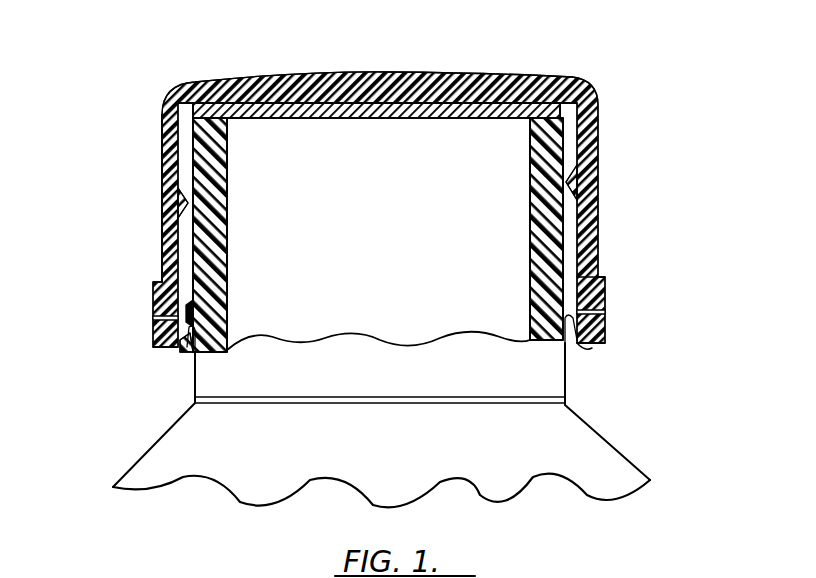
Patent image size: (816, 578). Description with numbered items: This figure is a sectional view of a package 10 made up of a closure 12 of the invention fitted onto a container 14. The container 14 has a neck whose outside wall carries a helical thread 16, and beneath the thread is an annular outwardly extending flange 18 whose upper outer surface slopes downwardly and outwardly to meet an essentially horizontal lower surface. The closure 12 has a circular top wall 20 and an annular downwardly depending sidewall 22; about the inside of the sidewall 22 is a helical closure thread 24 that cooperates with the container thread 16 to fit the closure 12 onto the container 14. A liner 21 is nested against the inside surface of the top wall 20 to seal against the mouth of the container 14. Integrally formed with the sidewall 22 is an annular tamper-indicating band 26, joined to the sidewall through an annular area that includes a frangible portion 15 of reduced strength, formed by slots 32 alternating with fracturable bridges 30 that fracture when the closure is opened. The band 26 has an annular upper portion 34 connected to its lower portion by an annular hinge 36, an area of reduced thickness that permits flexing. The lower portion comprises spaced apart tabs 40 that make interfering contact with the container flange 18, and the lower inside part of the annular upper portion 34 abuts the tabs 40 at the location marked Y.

The package 10 is at (402, 264).
The closure 12 is at (402, 202).
The container 14 is at (412, 411).
The frangible portion 15 is at (140, 315).
The helical thread 16 is at (190, 237).
The annular outwardly extending flange 18 is at (188, 303).
The circular top wall 20 is at (378, 88).
The liner 21 is at (322, 118).
The annular downwardly depending sidewall 22 is at (175, 152).
The helical closure thread 24 is at (193, 216).
The annular tamper-indicating band 26 is at (140, 334).
The fracturable bridges 30 is at (172, 353).
The slots 32 is at (608, 310).
The annular upper portion 34 is at (607, 337).
The annular hinge 36 is at (590, 348).
The tabs 40 is at (566, 338).
The abutment location Y is at (187, 362).